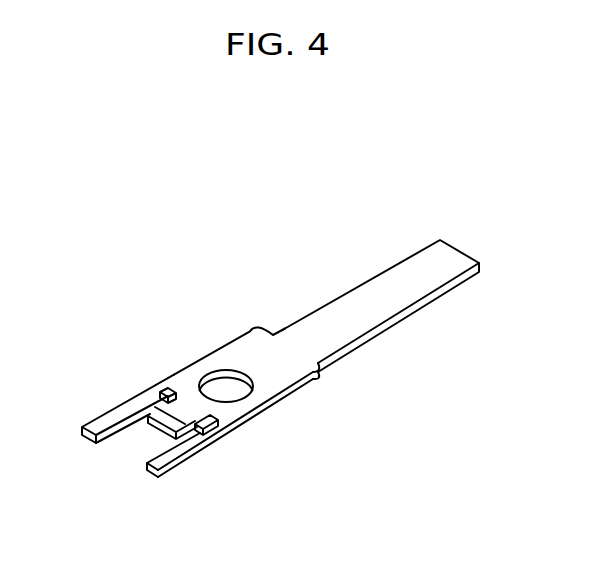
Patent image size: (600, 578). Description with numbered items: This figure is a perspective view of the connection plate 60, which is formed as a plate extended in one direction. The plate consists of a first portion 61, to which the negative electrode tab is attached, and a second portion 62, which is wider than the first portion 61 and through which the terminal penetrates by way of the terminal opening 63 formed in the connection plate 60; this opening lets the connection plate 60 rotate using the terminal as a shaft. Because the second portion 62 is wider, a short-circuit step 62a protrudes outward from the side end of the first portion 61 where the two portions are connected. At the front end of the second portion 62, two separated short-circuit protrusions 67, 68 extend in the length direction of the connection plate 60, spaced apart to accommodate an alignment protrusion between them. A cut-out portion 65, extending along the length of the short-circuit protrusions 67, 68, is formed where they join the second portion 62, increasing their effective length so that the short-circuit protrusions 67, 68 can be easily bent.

The connection plate 60 is at (213, 226).
The first portion 61 is at (427, 263).
The second portion 62 is at (279, 381).
The short-circuit step 62a is at (321, 366).
The terminal opening 63 is at (217, 373).
The cut-out portion 65 is at (160, 395).
The short-circuit protrusion 67 is at (96, 424).
The short-circuit protrusion 68 is at (163, 463).